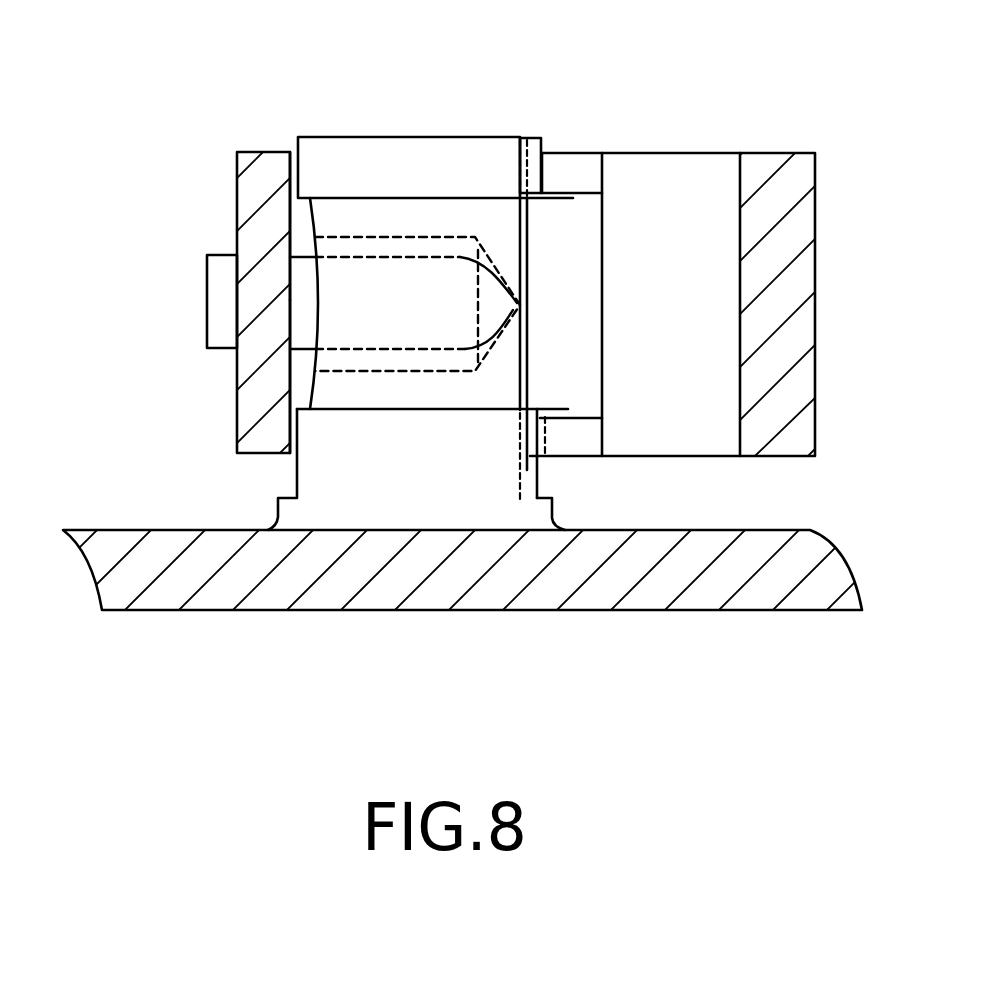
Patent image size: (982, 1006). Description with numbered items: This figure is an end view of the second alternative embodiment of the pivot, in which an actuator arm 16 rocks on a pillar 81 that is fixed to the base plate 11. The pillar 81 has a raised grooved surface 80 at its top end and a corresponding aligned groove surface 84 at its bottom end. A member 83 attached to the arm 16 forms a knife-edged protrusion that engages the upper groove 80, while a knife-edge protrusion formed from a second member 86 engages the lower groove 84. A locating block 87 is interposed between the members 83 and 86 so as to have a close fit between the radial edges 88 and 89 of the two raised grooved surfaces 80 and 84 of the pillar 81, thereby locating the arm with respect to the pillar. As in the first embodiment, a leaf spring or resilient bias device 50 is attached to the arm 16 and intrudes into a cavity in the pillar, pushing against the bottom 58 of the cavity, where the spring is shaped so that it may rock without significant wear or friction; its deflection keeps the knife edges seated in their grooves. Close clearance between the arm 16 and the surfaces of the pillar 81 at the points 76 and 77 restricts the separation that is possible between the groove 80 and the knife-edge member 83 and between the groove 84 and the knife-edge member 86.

The base plate 11 is at (280, 597).
The arm 16 is at (270, 165).
The resilient bias device 50 is at (220, 307).
The bottom of cavity 58 is at (326, 316).
The close clearance point 76 is at (288, 174).
The close clearance point 77 is at (290, 440).
The grooved surface 80 is at (521, 155).
The pillar 81 is at (403, 145).
The member 83 is at (553, 175).
The groove surface 84 is at (527, 465).
The member 86 is at (557, 438).
The locating block 87 is at (573, 302).
The radial edge 88 is at (530, 200).
The radial edge 89 is at (533, 410).